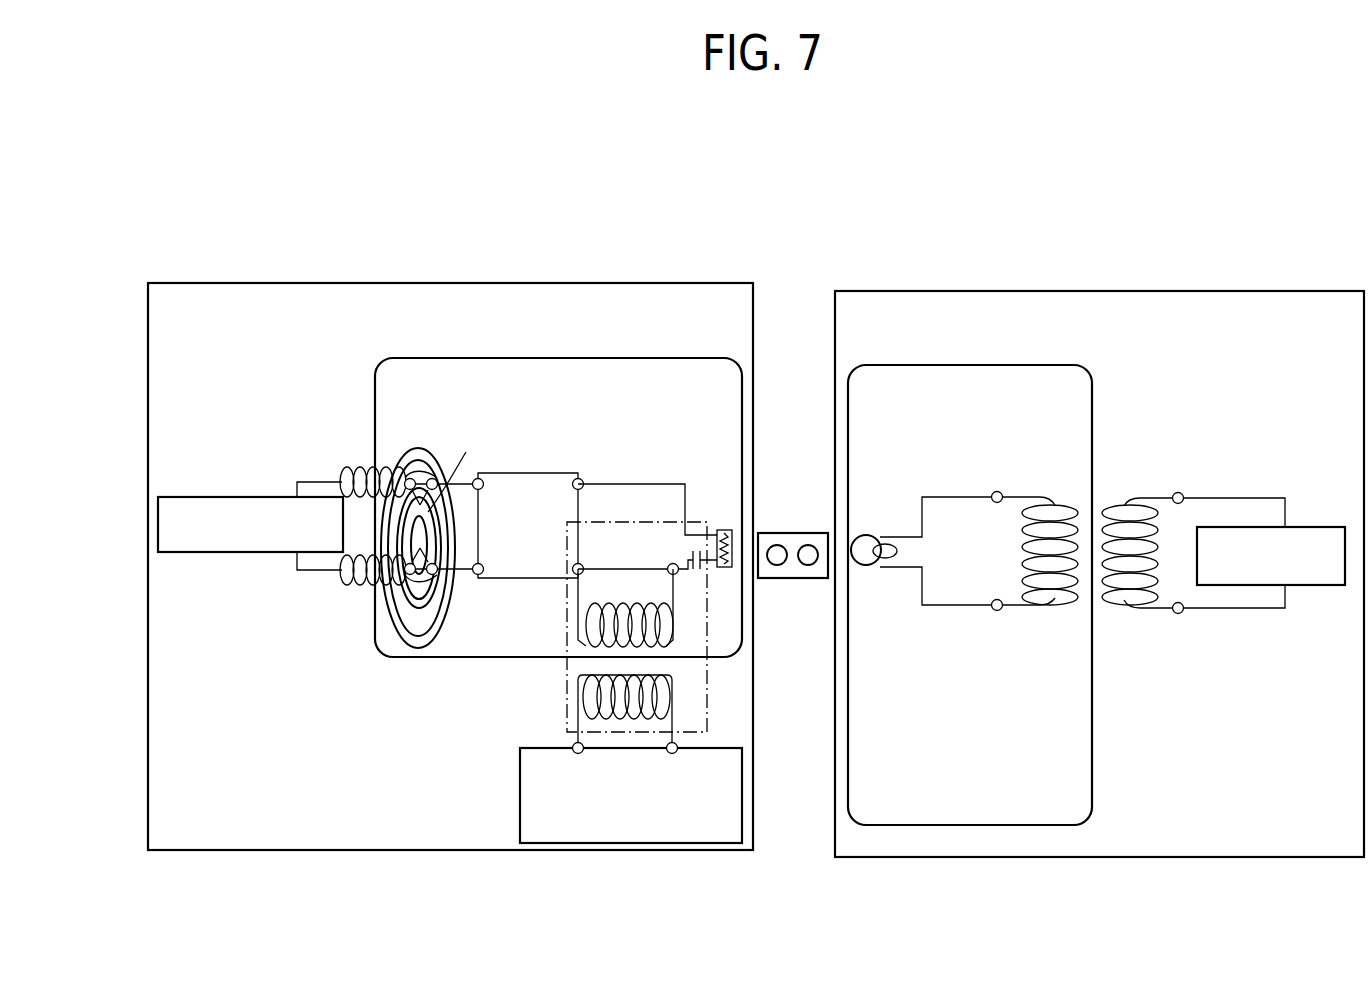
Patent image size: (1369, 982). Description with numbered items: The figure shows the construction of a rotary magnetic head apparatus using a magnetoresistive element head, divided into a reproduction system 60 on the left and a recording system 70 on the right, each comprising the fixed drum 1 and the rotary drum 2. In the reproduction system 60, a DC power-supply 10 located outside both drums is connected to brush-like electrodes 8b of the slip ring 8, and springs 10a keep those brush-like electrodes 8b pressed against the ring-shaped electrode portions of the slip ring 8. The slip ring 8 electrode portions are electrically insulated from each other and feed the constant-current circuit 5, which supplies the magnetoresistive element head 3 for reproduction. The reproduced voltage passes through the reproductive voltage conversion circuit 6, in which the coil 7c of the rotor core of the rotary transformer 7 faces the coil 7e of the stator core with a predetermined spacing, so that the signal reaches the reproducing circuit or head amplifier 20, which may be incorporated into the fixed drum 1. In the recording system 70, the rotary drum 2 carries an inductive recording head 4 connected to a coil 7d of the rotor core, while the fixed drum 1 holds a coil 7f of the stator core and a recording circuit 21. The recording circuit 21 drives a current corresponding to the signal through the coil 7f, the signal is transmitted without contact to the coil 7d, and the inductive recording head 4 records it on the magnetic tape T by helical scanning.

The fixed drum 1 is at (456, 716).
The rotary drum 2 is at (420, 358).
The magnetoresistive element head 3 is at (722, 572).
The inductive recording head 4 is at (867, 570).
The constant-current circuit 5 is at (557, 473).
The reproductive voltage conversion circuit 6 is at (636, 520).
The rotary transformer 7 is at (825, 563).
The coil of the rotor core 7c is at (572, 645).
The coil of the rotor core 7d is at (1052, 503).
The coil of the stator core 7e is at (578, 690).
The coil of the stator core 7f is at (1128, 506).
The slip ring 8 is at (403, 442).
The brush-like electrodes 8b is at (420, 465).
The DC power-supply 10 is at (268, 497).
The springs 10a is at (343, 467).
The head amplifier 20 is at (520, 787).
The recording circuit 21 is at (1305, 527).
The reproduction system 60 is at (470, 283).
The recording system 70 is at (1092, 290).
The magnetic tape T is at (789, 532).